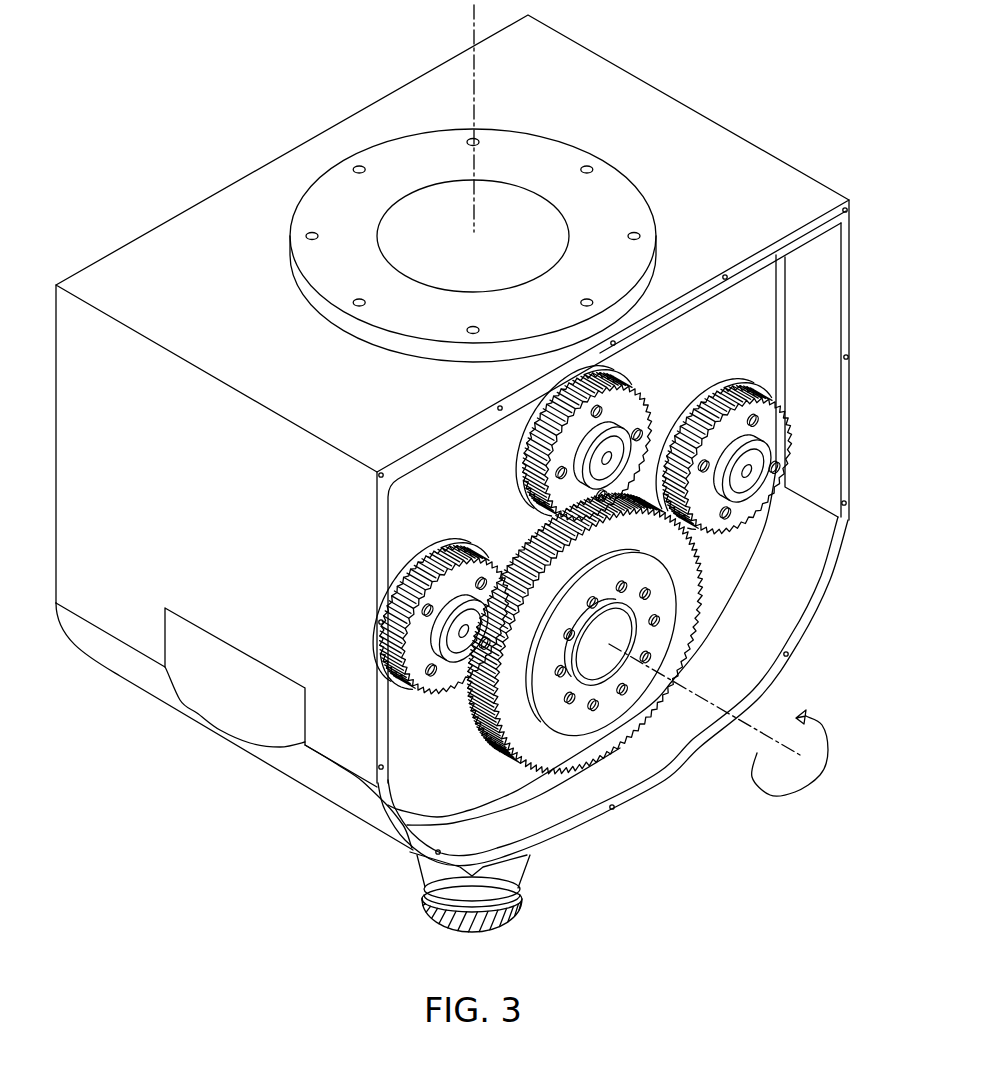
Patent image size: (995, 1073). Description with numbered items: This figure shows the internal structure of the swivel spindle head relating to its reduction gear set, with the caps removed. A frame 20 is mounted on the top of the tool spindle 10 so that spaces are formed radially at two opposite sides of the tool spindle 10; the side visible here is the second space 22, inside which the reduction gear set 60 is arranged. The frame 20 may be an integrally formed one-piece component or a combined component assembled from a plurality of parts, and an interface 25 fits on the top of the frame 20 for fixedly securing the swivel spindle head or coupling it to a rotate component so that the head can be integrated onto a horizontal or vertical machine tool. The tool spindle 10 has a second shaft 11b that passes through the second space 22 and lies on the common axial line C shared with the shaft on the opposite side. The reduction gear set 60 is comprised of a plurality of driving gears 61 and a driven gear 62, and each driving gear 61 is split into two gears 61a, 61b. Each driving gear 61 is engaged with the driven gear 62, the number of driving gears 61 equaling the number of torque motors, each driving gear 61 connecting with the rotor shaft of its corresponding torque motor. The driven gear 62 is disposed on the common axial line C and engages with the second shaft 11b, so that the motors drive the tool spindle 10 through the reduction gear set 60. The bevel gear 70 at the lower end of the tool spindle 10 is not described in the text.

The tool spindle 10 is at (435, 872).
The second shaft 11b is at (595, 632).
The frame 20 is at (658, 100).
The second space 22 is at (485, 775).
The interface 25 is at (408, 153).
The reduction gear set 60 is at (681, 742).
The driving gear 61 is at (572, 501).
The gear 61a is at (702, 400).
The gear 61b is at (667, 351).
The driven gear 62 is at (562, 752).
The bevel gear 70 is at (433, 922).
The common axial line C is at (723, 720).